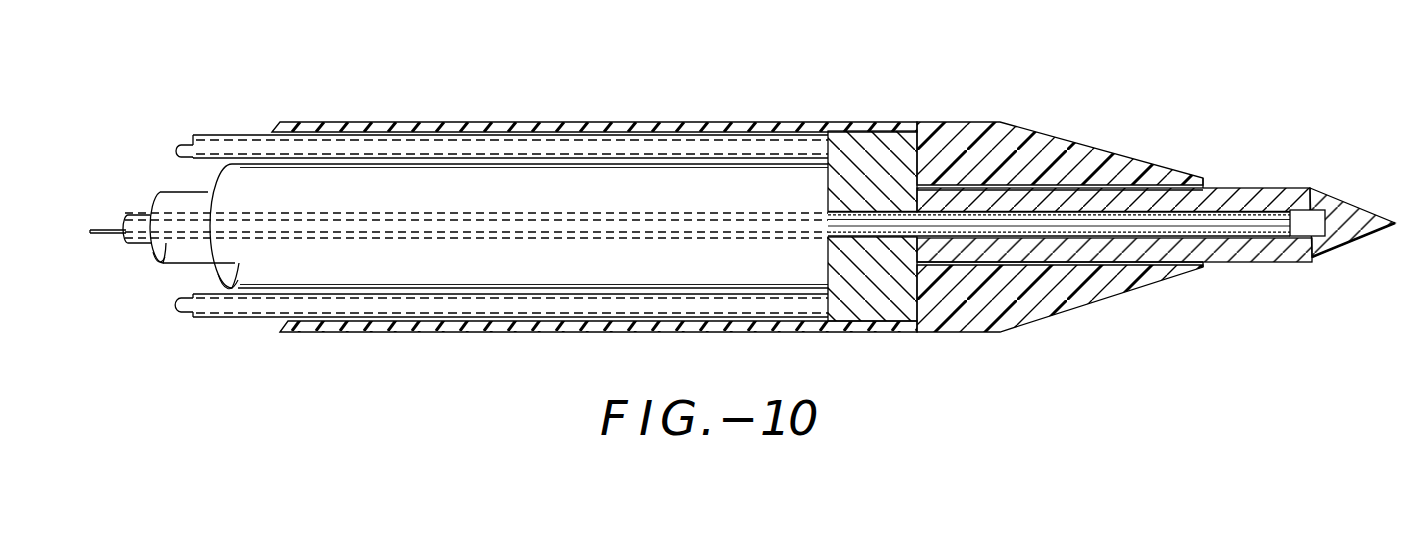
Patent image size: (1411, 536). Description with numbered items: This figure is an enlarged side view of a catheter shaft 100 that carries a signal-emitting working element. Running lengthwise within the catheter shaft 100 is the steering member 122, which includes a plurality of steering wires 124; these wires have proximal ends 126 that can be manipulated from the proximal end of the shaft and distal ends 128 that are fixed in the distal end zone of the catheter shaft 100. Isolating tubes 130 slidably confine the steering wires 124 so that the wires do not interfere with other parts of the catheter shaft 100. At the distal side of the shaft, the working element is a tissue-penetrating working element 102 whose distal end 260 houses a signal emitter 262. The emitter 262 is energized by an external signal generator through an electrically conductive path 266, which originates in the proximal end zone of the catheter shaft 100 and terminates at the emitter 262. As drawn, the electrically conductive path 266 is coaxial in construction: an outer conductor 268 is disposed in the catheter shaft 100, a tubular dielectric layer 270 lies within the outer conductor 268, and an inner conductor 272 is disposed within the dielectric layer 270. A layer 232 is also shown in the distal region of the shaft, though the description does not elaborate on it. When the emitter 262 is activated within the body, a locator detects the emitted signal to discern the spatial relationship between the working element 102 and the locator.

The catheter shaft 100 is at (765, 122).
The tissue-penetrating working element 102 is at (1290, 188).
The steering member 122 is at (673, 136).
The steering wires 124 is at (608, 140).
The proximal ends 126 is at (178, 148).
The distal ends 128 is at (827, 130).
The isolating tubes 130 is at (535, 135).
The upper layer 232 is at (1242, 188).
The distal end 260 is at (1382, 215).
The signal emitter 262 is at (1312, 195).
The electrically conductive path 266 is at (105, 234).
The outer conductor 268 is at (1280, 243).
The tubular dielectric layer 270 is at (1267, 240).
The inner conductor 272 is at (1233, 232).